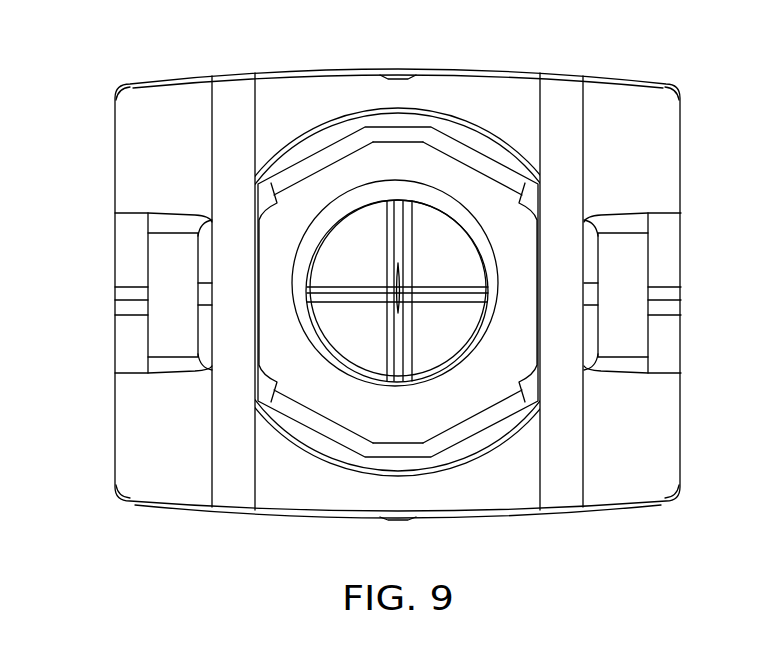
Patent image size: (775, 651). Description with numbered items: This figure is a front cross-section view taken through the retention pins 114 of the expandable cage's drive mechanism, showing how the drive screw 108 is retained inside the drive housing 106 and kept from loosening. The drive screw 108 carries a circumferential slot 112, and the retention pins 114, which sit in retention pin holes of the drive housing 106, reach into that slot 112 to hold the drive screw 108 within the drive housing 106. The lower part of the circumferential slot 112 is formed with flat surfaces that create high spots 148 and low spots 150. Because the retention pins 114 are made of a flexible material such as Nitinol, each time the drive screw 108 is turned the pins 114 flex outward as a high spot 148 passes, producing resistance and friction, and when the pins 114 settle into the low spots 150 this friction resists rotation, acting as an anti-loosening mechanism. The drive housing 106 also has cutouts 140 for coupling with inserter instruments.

The drive housing 106 is at (114, 446).
The drive screw 108 is at (472, 462).
The circumferential slot 112 is at (347, 132).
The retention pins 114 is at (231, 74).
The cutouts 140 is at (681, 257).
The high spots 148 is at (398, 108).
The low spots 150 is at (322, 156).